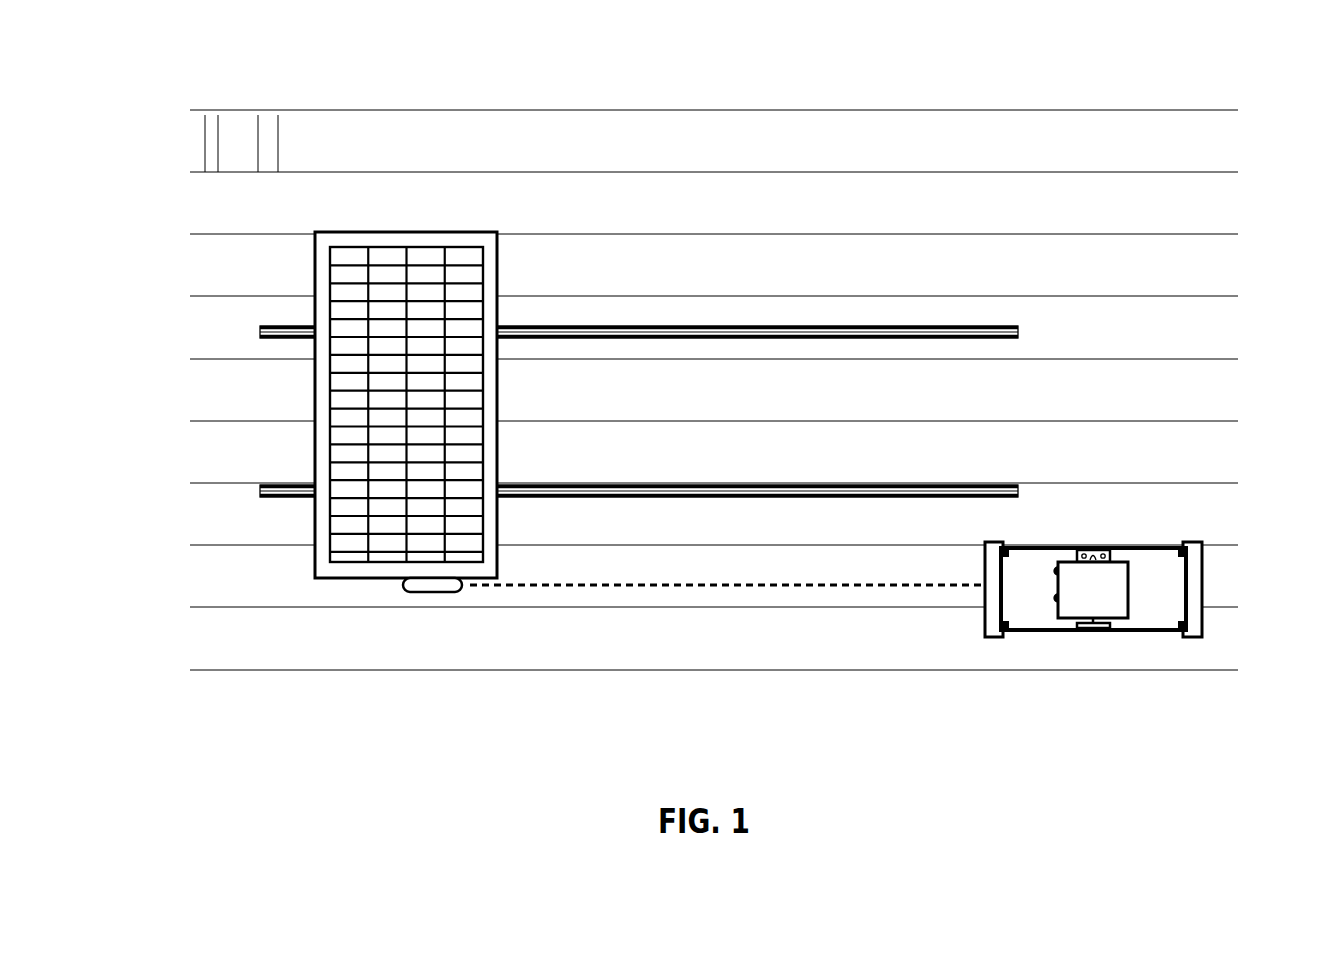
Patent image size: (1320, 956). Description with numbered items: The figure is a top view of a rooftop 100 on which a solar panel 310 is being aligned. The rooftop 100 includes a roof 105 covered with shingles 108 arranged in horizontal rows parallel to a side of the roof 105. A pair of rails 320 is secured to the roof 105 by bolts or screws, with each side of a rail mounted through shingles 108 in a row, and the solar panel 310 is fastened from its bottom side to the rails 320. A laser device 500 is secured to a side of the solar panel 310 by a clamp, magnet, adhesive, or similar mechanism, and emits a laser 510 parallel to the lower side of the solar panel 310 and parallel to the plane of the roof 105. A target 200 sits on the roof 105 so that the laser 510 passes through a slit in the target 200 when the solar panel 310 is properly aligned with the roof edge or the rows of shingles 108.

The rooftop 100 is at (350, 158).
The roof 105 is at (528, 145).
The shingles 108 is at (707, 140).
The target 200 is at (1203, 541).
The solar panel 310 is at (315, 260).
The rails 320 is at (575, 325).
The laser device 500 is at (433, 594).
The laser 510 is at (612, 590).